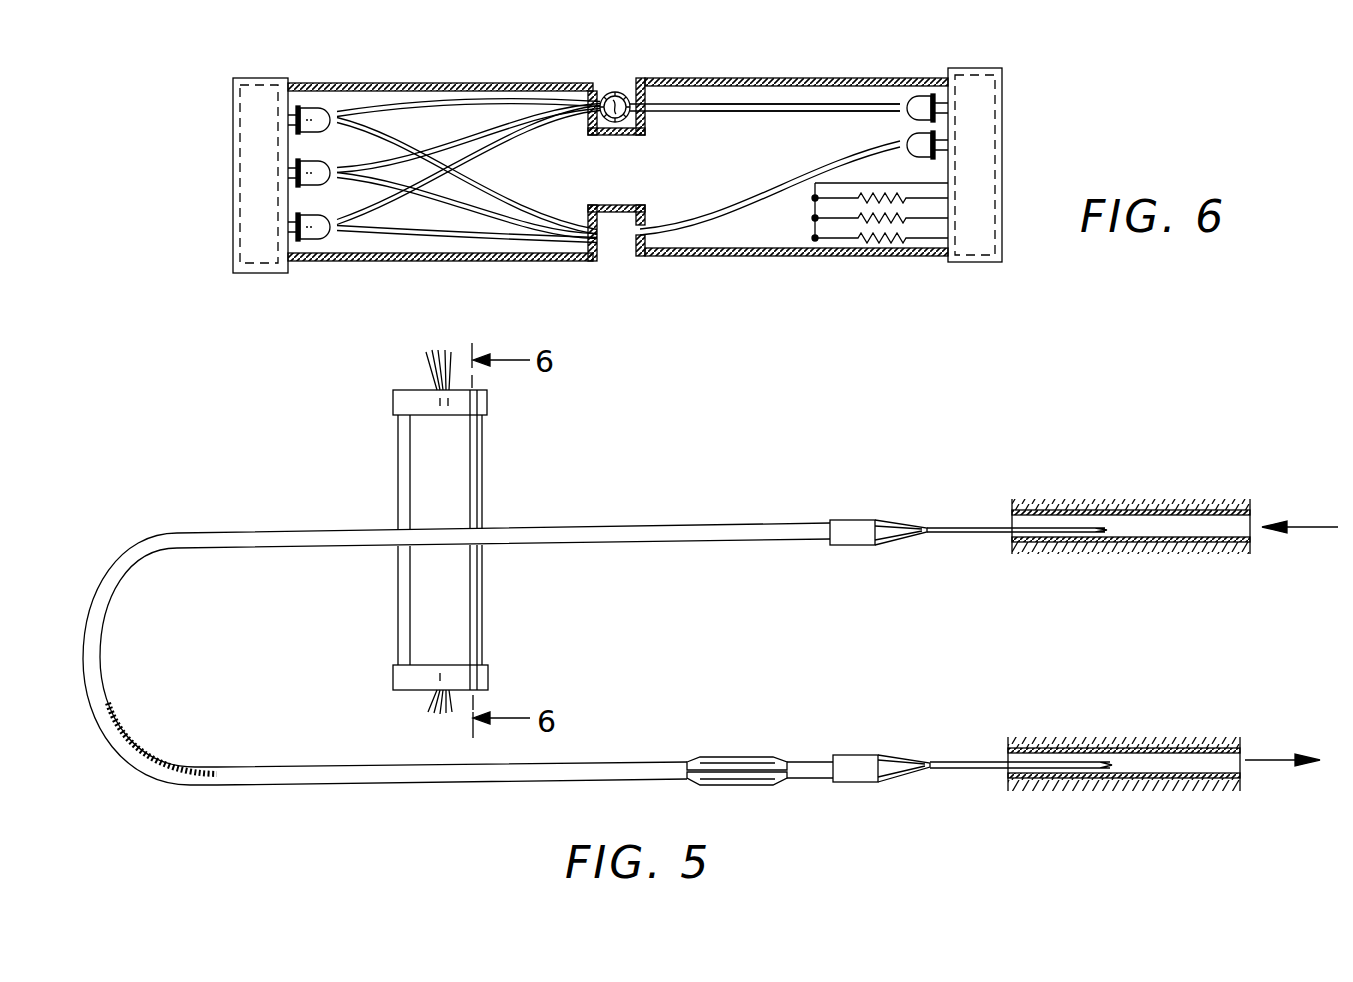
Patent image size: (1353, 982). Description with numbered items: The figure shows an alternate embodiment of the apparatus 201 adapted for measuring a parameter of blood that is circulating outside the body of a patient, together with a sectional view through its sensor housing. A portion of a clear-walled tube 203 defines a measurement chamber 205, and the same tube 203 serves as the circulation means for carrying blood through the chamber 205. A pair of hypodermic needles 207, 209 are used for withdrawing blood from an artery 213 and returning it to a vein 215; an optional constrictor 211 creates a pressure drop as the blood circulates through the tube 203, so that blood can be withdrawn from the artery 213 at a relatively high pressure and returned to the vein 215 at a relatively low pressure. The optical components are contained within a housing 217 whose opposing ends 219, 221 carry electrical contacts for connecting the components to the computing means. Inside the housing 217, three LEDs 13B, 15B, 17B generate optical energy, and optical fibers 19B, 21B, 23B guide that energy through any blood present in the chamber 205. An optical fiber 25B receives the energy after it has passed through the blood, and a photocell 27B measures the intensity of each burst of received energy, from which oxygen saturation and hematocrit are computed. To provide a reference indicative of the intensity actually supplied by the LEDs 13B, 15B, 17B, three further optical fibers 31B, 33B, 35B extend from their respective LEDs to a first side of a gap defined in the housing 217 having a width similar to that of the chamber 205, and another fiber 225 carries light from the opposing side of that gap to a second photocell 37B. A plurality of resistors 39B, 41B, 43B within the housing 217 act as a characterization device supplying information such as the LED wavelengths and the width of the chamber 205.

In FIG. 5, the apparatus 201 is at (250, 484).
In FIG. 6, the clear-walled tube 203 is at (625, 90).
In FIG. 5, the clear-walled tube 203 is at (690, 527).
In FIG. 6, the measurement chamber 205 is at (610, 93).
In FIG. 5, the hypodermic needle 207 is at (955, 520).
In FIG. 5, the hypodermic needle 209 is at (942, 757).
In FIG. 5, the constrictor 211 is at (728, 757).
In FIG. 5, the artery 213 is at (1088, 510).
In FIG. 5, the vein 215 is at (1068, 748).
In FIG. 6, the housing 217 is at (748, 258).
In FIG. 5, the housing 217 is at (483, 478).
In FIG. 6, the end of housing 219 is at (257, 78).
In FIG. 6, the end of housing 221 is at (983, 67).
In FIG. 6, the optical fiber 225 is at (765, 190).
In FIG. 6, the LED 13B is at (323, 108).
In FIG. 6, the LED 15B is at (306, 163).
In FIG. 6, the LED 17B is at (318, 242).
In FIG. 6, the optical fiber 19B is at (432, 103).
In FIG. 6, the optical fiber 21B is at (470, 133).
In FIG. 6, the optical fiber 23B is at (533, 135).
In FIG. 6, the optical fiber 25B is at (775, 113).
In FIG. 6, the photocell 27B is at (906, 118).
In FIG. 6, the optical fiber 31B is at (517, 200).
In FIG. 6, the optical fiber 33B is at (362, 185).
In FIG. 6, the optical fiber 35B is at (416, 235).
In FIG. 6, the photocell 37B is at (920, 158).
In FIG. 6, the resistor 39B is at (882, 240).
In FIG. 6, the resistor 41B is at (855, 222).
In FIG. 6, the resistor 43B is at (913, 200).